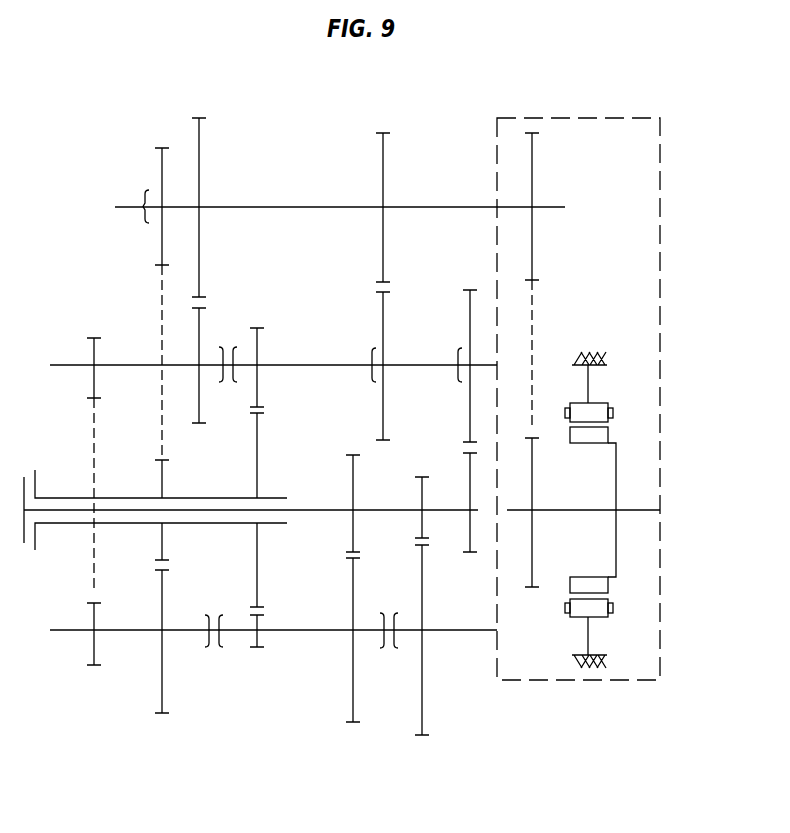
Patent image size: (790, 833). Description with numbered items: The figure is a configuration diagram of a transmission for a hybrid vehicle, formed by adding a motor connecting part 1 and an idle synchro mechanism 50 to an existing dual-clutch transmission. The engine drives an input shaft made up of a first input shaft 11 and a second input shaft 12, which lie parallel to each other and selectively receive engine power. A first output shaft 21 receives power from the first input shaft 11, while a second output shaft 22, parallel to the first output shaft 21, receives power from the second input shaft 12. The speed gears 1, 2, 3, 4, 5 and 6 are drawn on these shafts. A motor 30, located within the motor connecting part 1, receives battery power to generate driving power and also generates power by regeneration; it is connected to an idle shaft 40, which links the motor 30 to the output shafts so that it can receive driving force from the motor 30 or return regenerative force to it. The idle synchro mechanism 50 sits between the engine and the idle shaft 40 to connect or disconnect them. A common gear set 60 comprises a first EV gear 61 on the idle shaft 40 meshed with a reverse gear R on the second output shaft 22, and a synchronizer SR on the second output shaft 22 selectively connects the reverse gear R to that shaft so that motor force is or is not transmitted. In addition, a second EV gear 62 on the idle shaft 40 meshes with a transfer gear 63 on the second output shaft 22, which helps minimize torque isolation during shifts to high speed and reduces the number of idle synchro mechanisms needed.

The motor connecting part 1 is at (700, 165).
The second speed gear 2 is at (162, 634).
The third speed gear 3 is at (372, 605).
The fourth speed gear 4 is at (234, 601).
The fifth speed gear 5 is at (467, 407).
The sixth speed gear 6 is at (257, 398).
The reverse gear R is at (199, 333).
The synchronizer SR is at (245, 352).
The first input shaft 11 is at (323, 508).
The second input shaft 12 is at (205, 497).
The first output shaft 21 is at (128, 632).
The second output shaft 22 is at (133, 362).
The motor 30 is at (630, 398).
The idle shaft 40 is at (117, 208).
The idle synchro mechanism 50 is at (150, 183).
The common gear set 60 is at (313, 248).
The first EV gear 61 is at (199, 175).
The second EV gear 62 is at (385, 165).
The transfer gear 63 is at (385, 320).